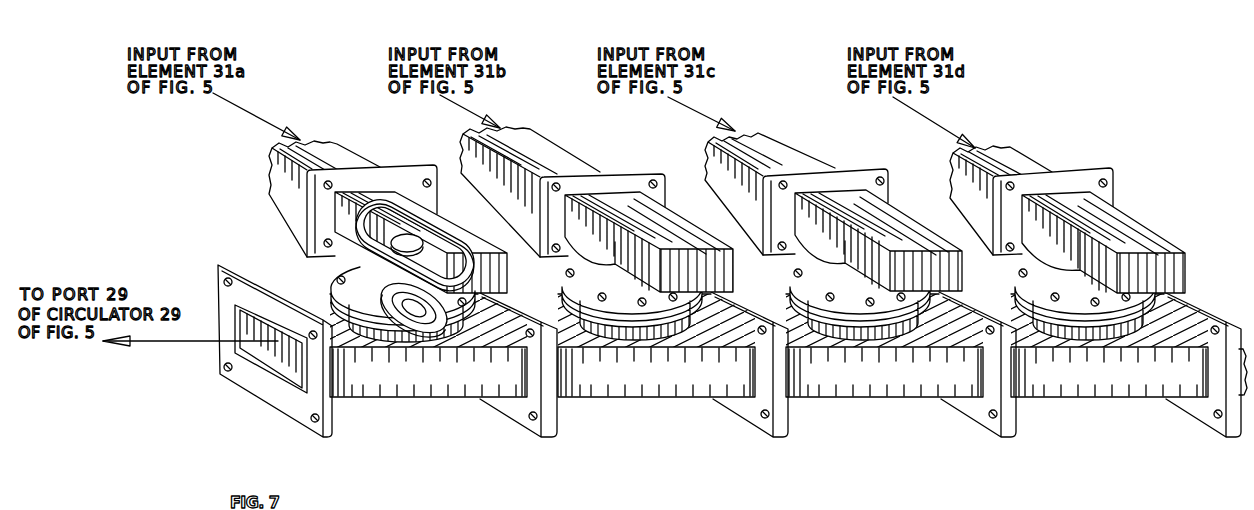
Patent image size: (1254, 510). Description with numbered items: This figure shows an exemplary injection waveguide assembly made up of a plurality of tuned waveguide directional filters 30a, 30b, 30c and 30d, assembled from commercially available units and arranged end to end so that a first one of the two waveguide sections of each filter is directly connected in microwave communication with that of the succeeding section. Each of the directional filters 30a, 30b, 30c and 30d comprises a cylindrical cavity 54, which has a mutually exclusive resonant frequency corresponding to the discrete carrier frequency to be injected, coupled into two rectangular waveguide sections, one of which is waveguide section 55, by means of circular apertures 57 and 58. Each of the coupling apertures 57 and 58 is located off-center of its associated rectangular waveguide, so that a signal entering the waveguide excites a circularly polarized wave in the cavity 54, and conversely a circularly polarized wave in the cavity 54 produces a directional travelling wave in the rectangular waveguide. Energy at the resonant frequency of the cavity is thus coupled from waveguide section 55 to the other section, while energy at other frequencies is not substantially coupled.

The waveguide directional filter 30a is at (400, 382).
The waveguide directional filter 30b is at (678, 382).
The waveguide directional filter 30c is at (893, 383).
The waveguide directional filter 30d is at (1115, 384).
The cylindrical cavity 54 is at (374, 292).
The rectangular waveguide section 55 is at (460, 228).
The circular aperture 57 is at (418, 247).
The circular aperture 58 is at (418, 340).